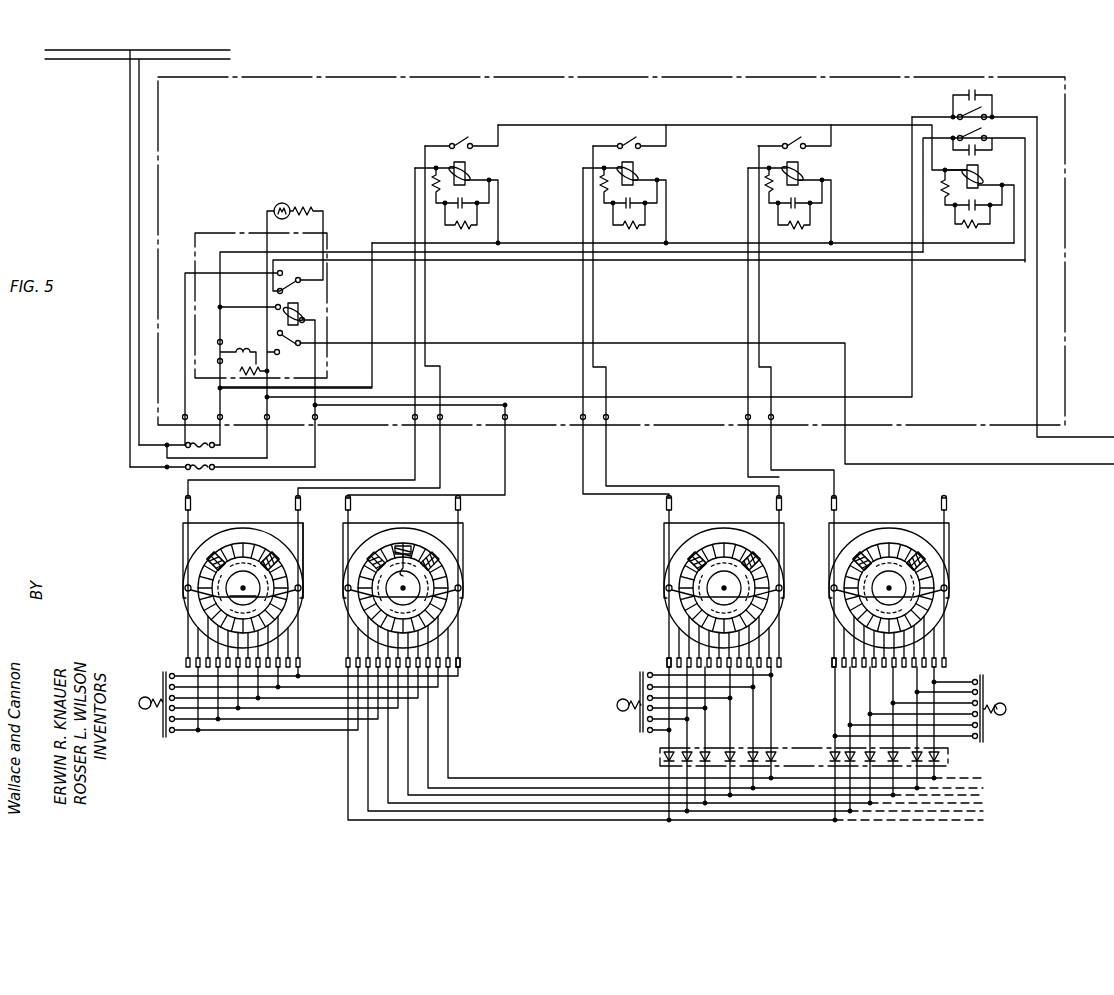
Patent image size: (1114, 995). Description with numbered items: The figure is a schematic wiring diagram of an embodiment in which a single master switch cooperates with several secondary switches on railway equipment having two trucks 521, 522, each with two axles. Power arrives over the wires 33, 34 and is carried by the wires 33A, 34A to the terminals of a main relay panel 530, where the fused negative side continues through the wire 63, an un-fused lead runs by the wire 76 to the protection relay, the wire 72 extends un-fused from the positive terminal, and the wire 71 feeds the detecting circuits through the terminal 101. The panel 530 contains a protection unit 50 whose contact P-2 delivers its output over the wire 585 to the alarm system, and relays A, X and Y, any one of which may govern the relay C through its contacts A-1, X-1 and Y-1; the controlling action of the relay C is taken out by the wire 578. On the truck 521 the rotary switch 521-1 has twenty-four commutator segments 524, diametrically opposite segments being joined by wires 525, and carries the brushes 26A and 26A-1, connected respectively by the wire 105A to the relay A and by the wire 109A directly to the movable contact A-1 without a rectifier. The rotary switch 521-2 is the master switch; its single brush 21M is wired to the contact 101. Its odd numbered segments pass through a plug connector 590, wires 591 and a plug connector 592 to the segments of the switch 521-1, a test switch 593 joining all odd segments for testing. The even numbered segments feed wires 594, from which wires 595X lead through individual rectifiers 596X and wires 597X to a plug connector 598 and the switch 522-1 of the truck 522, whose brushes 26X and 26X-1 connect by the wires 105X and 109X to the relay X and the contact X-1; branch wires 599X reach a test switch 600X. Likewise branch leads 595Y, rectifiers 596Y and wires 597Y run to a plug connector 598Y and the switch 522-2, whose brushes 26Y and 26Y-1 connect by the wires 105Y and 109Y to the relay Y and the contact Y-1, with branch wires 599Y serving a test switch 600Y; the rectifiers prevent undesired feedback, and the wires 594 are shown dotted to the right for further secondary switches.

The wire 33 is at (230, 50).
The wire 34 is at (232, 59).
The main relay panel 530 is at (393, 78).
The protection unit 50 is at (600, 335).
The contact of the protection unit P-2 is at (291, 335).
The relay contact A-1 is at (466, 137).
The relay A is at (457, 202).
The relay contact X-1 is at (634, 137).
The relay X is at (625, 202).
The relay contact Y-1 is at (799, 137).
The relay Y is at (790, 202).
The relay C is at (974, 176).
The wire 109A is at (426, 313).
The terminal 101 is at (508, 416).
The wire 33A is at (130, 408).
The wire 34A is at (139, 432).
The wire 76 is at (185, 440).
The wire 63 is at (222, 440).
The wire 72 is at (269, 440).
The wire 71 is at (317, 449).
The wire 105Y is at (748, 447).
The wire 109Y is at (771, 447).
The wire 585 is at (916, 464).
The wire 578 is at (1075, 437).
The wire 105A is at (186, 494).
The wire 105X is at (636, 494).
The wire 109X is at (630, 486).
The commutator segments 524 is at (270, 548).
The rotary switch 521-1 is at (273, 520).
The wires 525 is at (305, 560).
The rotary switch 521-2 is at (434, 522).
The master brush 21M is at (412, 566).
The rotary switch 522-1 is at (756, 522).
The rotary switch 522-2 is at (950, 522).
The brush 26A is at (210, 578).
The brush 26A-1 is at (258, 578).
The brush 26X is at (690, 578).
The brush 26X-1 is at (760, 566).
The brush 26Y is at (855, 578).
The brush 26Y-1 is at (918, 568).
The plug connector 592 is at (298, 665).
The wires 591 is at (300, 680).
The plug connector 590 is at (468, 668).
The test switch 593 is at (162, 684).
The truck 521 is at (550, 651).
The wires 594 is at (470, 784).
The plug connector 598 is at (664, 663).
The branch wires 599X is at (656, 674).
The test switch 600X is at (631, 691).
The wires 597X is at (668, 740).
The rectifiers 596X is at (660, 757).
The wires 595X is at (666, 783).
The plug connector 598Y is at (825, 663).
The branch wires 599Y is at (968, 680).
The test switch 600Y is at (996, 694).
The wires 597Y is at (835, 700).
The rectifiers 596Y is at (835, 750).
The branch leads 595Y is at (835, 784).
The truck 522 is at (821, 665).